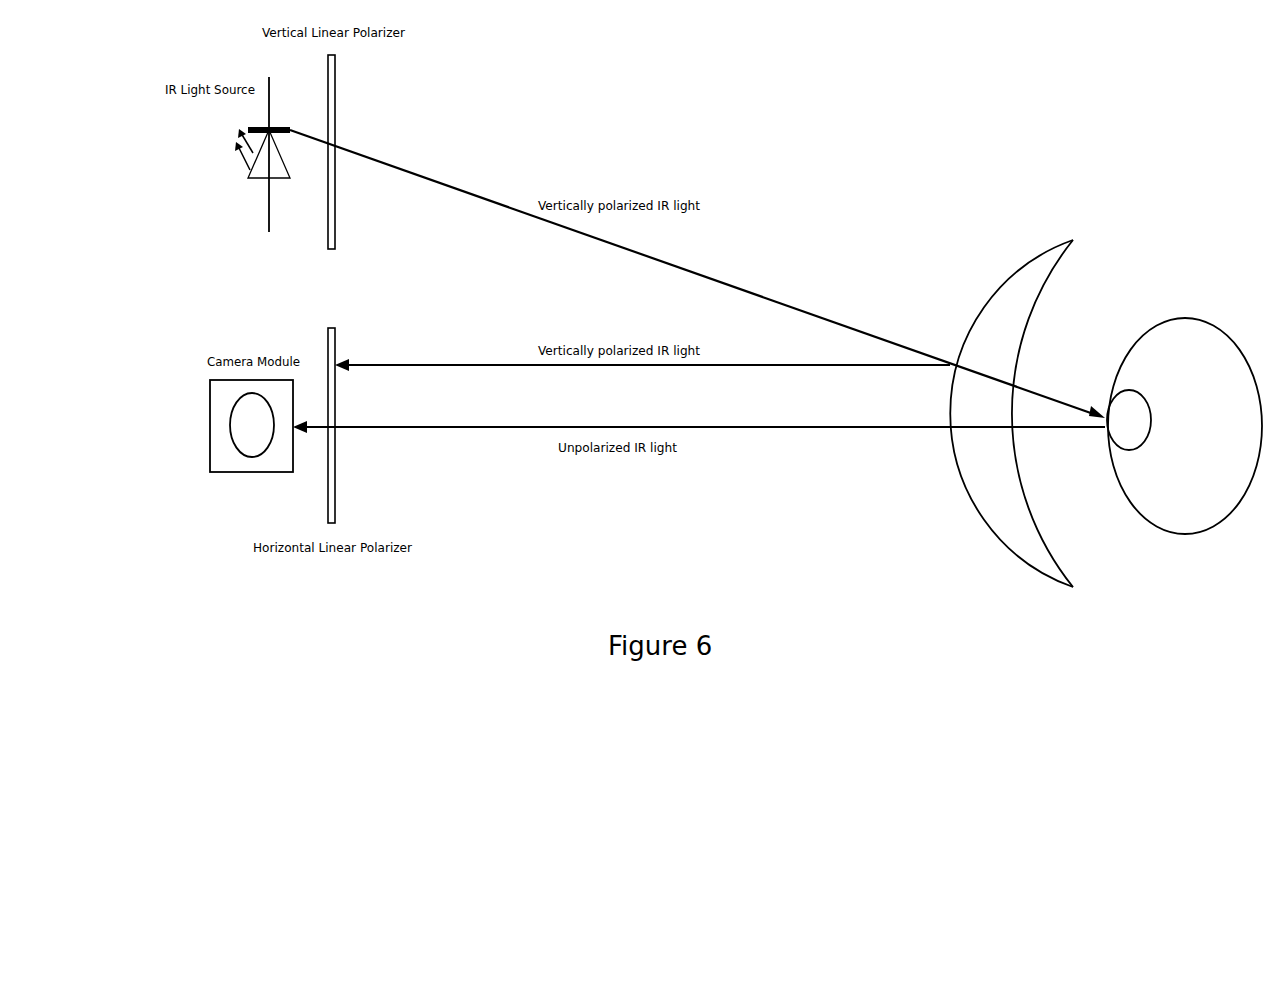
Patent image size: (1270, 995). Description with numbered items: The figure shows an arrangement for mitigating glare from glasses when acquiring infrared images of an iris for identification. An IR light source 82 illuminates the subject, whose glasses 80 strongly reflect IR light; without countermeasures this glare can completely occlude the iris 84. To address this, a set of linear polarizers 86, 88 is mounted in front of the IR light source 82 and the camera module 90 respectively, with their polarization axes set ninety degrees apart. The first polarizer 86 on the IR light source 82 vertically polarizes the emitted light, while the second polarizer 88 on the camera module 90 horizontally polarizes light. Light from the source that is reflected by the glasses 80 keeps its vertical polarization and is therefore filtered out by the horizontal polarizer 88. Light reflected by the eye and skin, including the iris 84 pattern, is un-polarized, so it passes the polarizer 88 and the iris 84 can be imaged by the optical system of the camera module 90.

The glasses 80 is at (988, 285).
The IR light source 82 is at (267, 203).
The iris 84 is at (1116, 512).
The first polarizer 86 is at (335, 105).
The second polarizer 88 is at (335, 472).
The camera module 90 is at (228, 473).